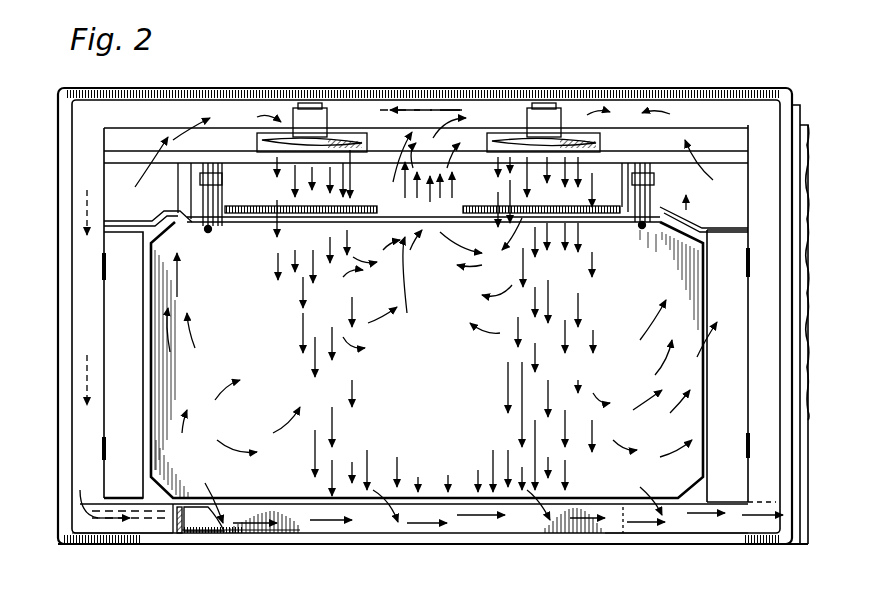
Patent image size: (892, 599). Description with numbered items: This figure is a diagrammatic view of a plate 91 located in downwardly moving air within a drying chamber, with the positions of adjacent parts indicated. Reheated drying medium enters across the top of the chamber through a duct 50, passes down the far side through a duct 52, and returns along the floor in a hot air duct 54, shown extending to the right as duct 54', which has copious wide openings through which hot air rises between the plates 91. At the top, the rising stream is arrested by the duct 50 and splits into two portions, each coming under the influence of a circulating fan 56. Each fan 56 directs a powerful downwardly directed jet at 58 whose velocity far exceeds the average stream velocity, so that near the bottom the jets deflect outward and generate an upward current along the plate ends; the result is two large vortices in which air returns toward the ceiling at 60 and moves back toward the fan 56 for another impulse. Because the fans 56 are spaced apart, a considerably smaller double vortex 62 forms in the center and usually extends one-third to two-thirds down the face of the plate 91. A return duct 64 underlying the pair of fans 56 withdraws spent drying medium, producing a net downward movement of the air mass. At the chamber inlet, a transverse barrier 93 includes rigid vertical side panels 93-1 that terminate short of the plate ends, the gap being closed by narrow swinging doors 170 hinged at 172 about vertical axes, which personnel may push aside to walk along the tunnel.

The duct 50 is at (622, 118).
The duct 52 is at (82, 148).
The hot air duct 54 is at (122, 558).
The bottom air duct right portion 54' is at (665, 542).
The circulating fan 56 is at (334, 131).
The downwardly directed jet 58 is at (300, 298).
The ceiling return region 60 is at (426, 207).
The double vortex 62 is at (393, 182).
The return duct 64 is at (407, 527).
The plate 91 is at (197, 487).
The air duct 93 is at (127, 170).
The vertical side panel 93-1 is at (763, 356).
The swinging door 170 is at (743, 486).
The hinge 172 is at (102, 257).